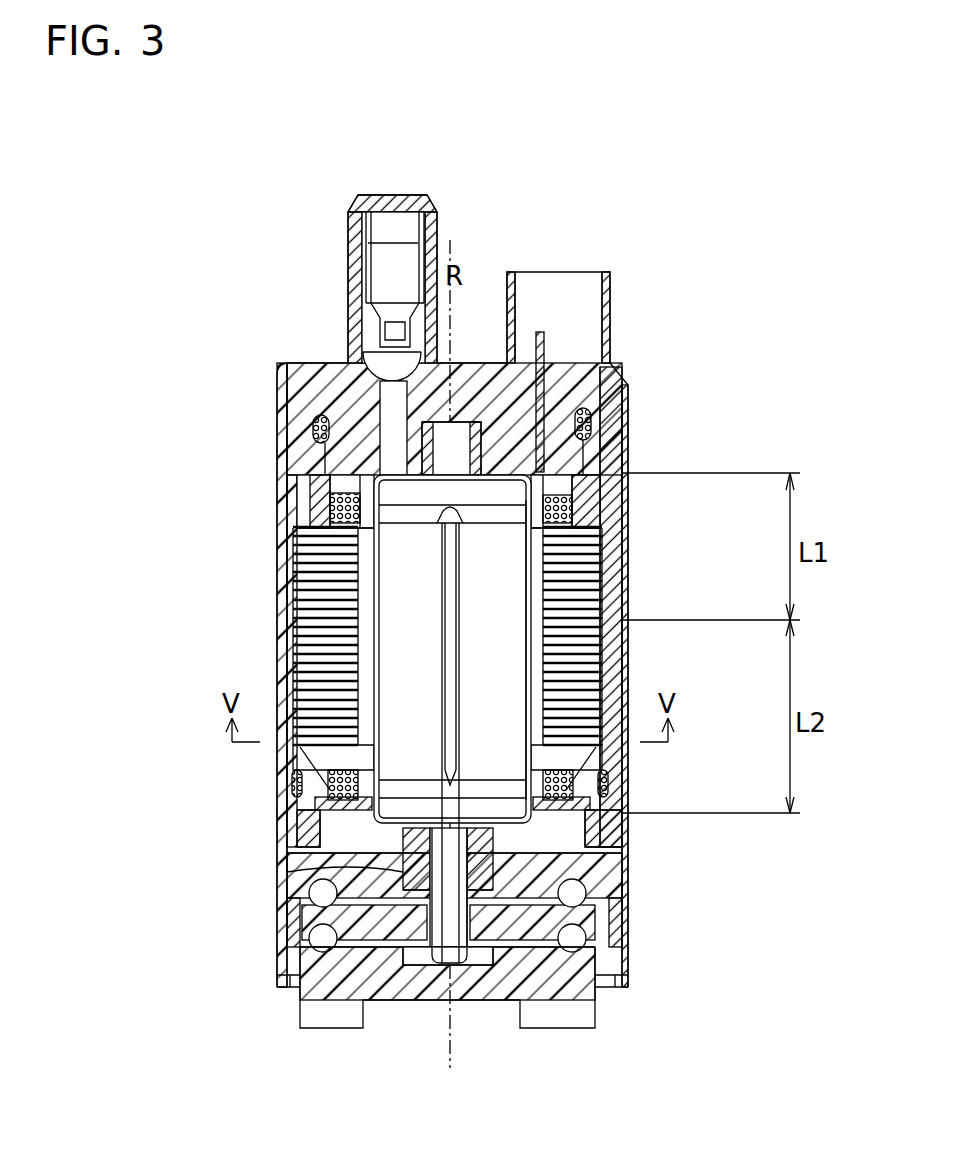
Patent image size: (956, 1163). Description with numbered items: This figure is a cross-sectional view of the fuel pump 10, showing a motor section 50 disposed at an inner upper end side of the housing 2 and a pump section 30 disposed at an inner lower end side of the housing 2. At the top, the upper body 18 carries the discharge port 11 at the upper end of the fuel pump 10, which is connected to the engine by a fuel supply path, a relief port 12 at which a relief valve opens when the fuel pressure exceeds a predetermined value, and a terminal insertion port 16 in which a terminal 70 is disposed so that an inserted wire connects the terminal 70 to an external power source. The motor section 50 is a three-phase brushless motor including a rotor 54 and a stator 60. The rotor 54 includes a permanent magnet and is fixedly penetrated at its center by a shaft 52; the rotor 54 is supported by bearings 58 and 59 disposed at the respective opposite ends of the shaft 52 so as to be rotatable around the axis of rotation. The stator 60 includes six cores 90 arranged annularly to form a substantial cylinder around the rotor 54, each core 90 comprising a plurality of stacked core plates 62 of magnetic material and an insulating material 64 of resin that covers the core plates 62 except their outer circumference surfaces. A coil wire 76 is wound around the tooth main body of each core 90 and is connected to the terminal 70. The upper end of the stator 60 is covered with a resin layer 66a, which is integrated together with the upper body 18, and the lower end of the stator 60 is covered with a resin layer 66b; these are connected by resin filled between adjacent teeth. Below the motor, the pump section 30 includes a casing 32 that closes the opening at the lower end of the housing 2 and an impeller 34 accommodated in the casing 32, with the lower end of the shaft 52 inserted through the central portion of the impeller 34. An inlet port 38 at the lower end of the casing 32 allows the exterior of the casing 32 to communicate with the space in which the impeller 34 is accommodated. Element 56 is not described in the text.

The fuel pump 10 is at (508, 127).
The discharge port 11 is at (393, 235).
The relief port 12 is at (355, 262).
The terminal insertion port 16 is at (535, 288).
The upper body 18 is at (318, 360).
The terminal 70 is at (556, 352).
The bearing 58 is at (400, 413).
The shaft 52 is at (602, 419).
The resin layer 66a is at (318, 481).
The insulating material 64 is at (625, 478).
The core 90 is at (330, 501).
The motor section 50 is at (634, 557).
The stator 60 is at (320, 566).
The rotor 54 is at (515, 581).
The armature side wall 56 is at (622, 605).
The housing 2 is at (624, 646).
The core plate 62 is at (612, 669).
The coil wire 76 is at (622, 791).
The resin layer 66b is at (615, 831).
The pump section 30 is at (642, 859).
The bearing 59 is at (278, 872).
The casing 32 is at (620, 883).
The impeller 34 is at (610, 916).
The inlet port 38 is at (557, 1020).